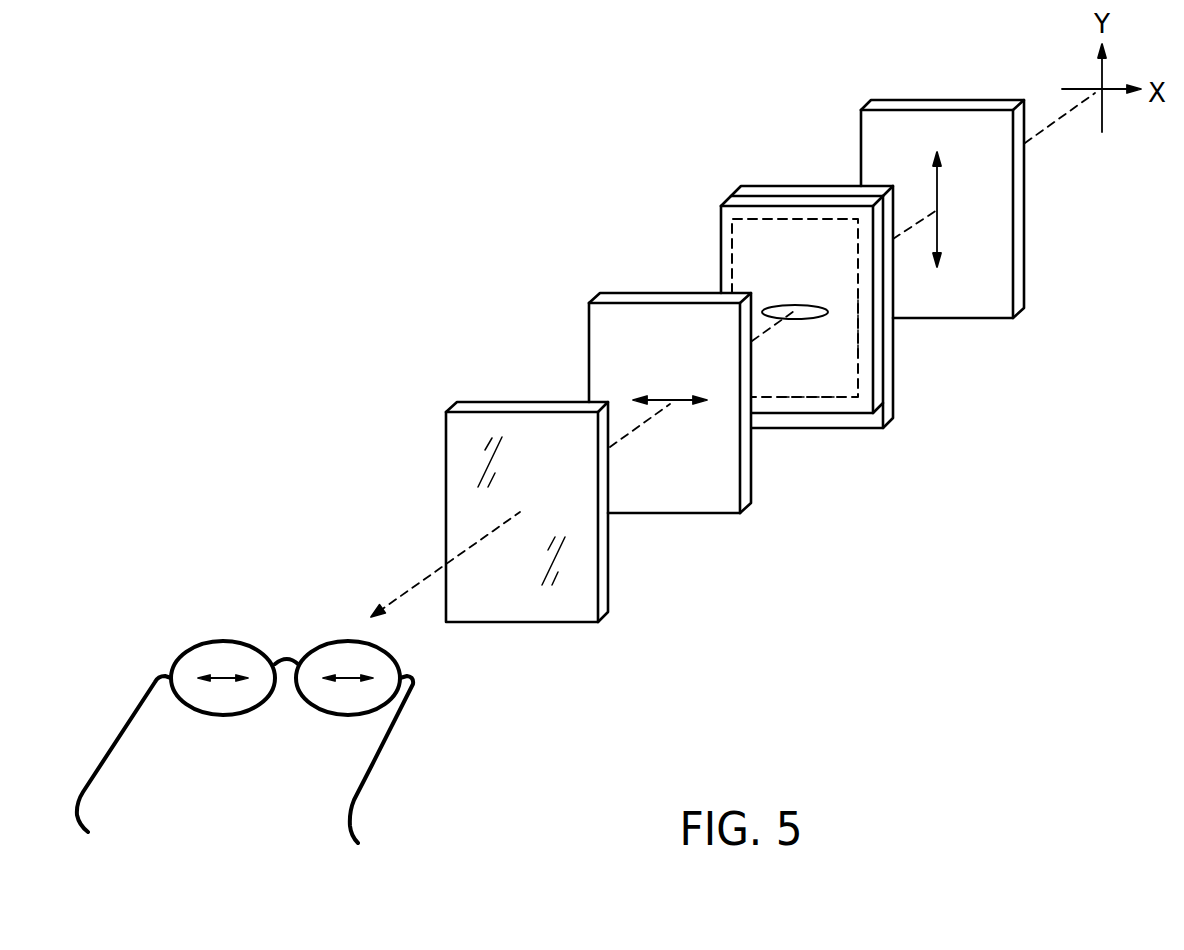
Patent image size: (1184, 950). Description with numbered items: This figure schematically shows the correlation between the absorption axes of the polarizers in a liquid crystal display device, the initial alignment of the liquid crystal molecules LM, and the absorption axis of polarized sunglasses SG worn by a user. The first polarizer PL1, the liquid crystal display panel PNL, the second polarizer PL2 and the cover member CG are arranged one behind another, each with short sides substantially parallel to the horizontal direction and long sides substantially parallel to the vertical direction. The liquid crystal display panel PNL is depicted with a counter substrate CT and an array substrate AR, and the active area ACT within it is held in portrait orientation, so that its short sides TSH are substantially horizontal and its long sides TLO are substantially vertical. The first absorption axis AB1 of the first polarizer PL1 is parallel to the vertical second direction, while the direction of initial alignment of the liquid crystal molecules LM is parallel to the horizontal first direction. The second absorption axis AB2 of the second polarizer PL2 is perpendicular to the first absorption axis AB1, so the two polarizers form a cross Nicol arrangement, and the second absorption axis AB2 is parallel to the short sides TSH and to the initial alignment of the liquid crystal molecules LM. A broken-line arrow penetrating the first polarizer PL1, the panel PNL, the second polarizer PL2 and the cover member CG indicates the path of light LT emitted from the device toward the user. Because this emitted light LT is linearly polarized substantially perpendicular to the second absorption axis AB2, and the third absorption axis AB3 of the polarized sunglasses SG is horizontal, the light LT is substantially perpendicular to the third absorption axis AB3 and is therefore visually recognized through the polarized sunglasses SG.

The first polarizer PL1 is at (997, 104).
The first absorption axis AB1 is at (936, 192).
The liquid crystal display panel PNL is at (792, 280).
The counter substrate CT is at (733, 203).
The array substrate AR is at (777, 188).
The liquid crystal molecules LM is at (778, 305).
The active area ACT is at (864, 372).
The long sides TLO is at (860, 332).
The short sides TSH is at (810, 400).
The second polarizer PL2 is at (661, 297).
The second absorption axis AB2 is at (668, 397).
The cover member CG is at (508, 405).
The light LT is at (403, 597).
The polarized sunglasses SG is at (365, 785).
The third absorption axis AB3 is at (348, 680).